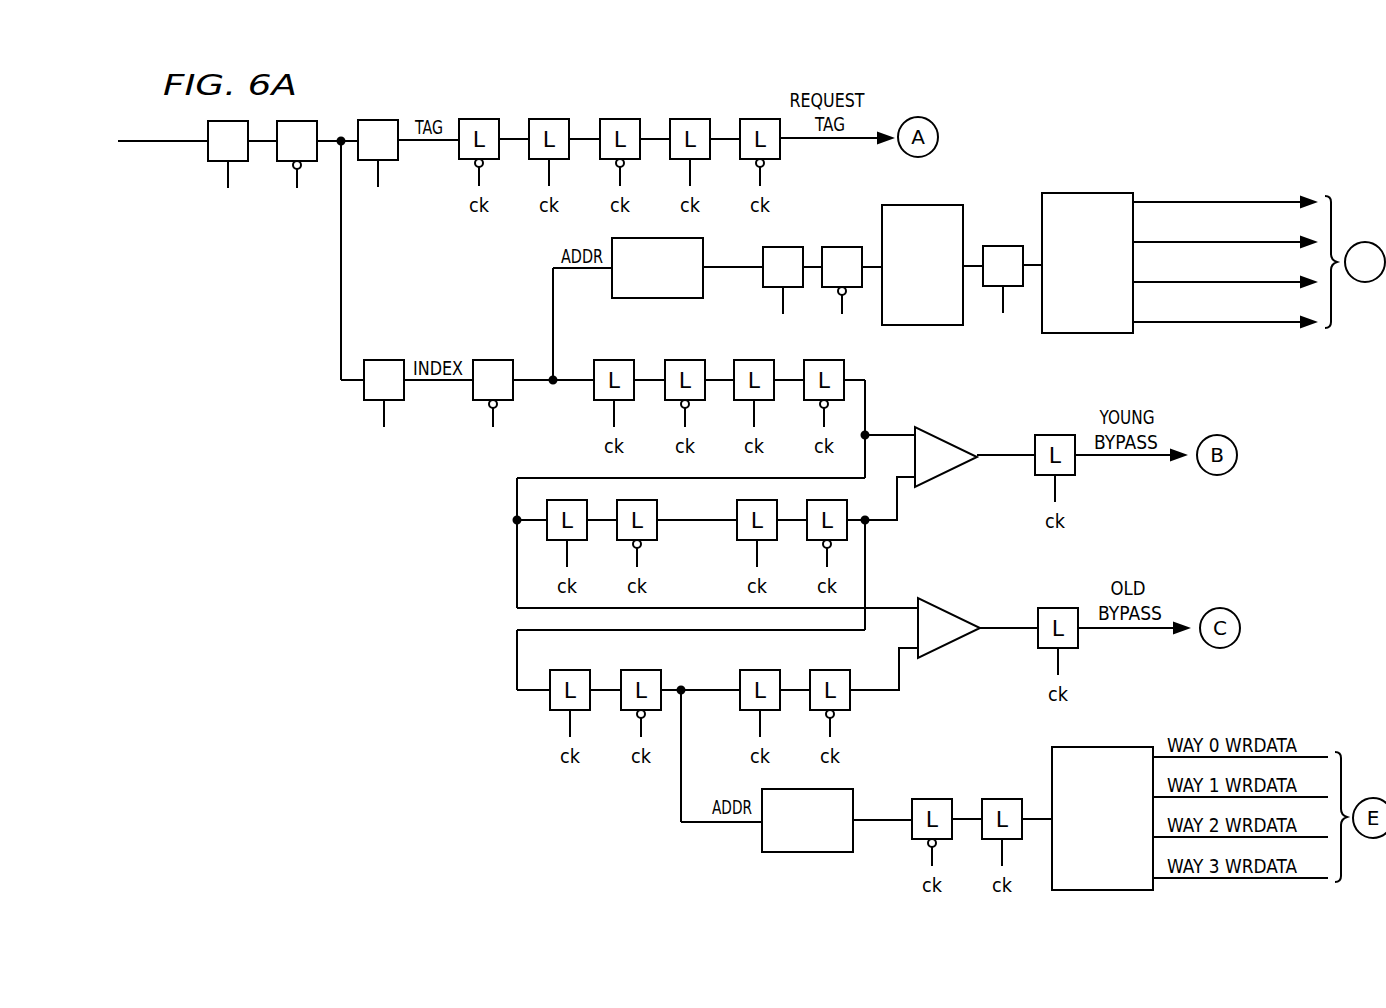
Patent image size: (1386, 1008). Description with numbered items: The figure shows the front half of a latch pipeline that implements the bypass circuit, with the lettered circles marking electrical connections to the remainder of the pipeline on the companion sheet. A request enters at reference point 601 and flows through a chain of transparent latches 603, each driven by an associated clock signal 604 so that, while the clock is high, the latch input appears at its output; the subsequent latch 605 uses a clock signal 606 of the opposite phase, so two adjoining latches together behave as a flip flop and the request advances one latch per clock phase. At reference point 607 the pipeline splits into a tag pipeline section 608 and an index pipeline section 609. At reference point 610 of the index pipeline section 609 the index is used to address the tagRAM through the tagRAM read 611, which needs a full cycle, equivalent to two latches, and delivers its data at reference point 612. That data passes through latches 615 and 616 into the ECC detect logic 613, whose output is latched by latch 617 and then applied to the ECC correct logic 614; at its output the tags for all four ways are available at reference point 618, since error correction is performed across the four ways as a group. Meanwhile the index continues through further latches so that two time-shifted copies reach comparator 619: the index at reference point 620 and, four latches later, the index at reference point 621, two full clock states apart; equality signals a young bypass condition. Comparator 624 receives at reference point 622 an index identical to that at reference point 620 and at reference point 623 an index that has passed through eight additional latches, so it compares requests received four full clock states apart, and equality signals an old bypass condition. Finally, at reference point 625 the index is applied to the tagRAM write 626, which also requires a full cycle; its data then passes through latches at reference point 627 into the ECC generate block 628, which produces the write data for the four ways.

The reference point 601 is at (156, 150).
The latch 603 is at (217, 161).
The clock signal 604 is at (229, 219).
The subsequent latch 605 is at (287, 161).
The clock signal 606 is at (298, 219).
The reference point 607 is at (344, 128).
The tag pipeline section 608 is at (430, 116).
The index pipeline section 609 is at (390, 360).
The reference point 610 is at (546, 365).
The tagRAM read 611 is at (652, 299).
The reference point 612 is at (743, 269).
The ECC detect logic 613 is at (945, 205).
The ECC correct logic 614 is at (1090, 193).
The latch 615 is at (785, 247).
The latch 616 is at (843, 247).
The latch 617 is at (1003, 246).
The reference point 618 is at (1260, 163).
The comparator 619 is at (957, 443).
The reference point 620 is at (888, 435).
The reference point 621 is at (897, 505).
The reference point 622 is at (890, 608).
The reference point 623 is at (899, 675).
The comparator 624 is at (960, 618).
The reference point 625 is at (690, 699).
The tagRAM write 626 is at (760, 836).
The tag RAM write data line 627 is at (875, 822).
The ECC generate 628 is at (1110, 747).